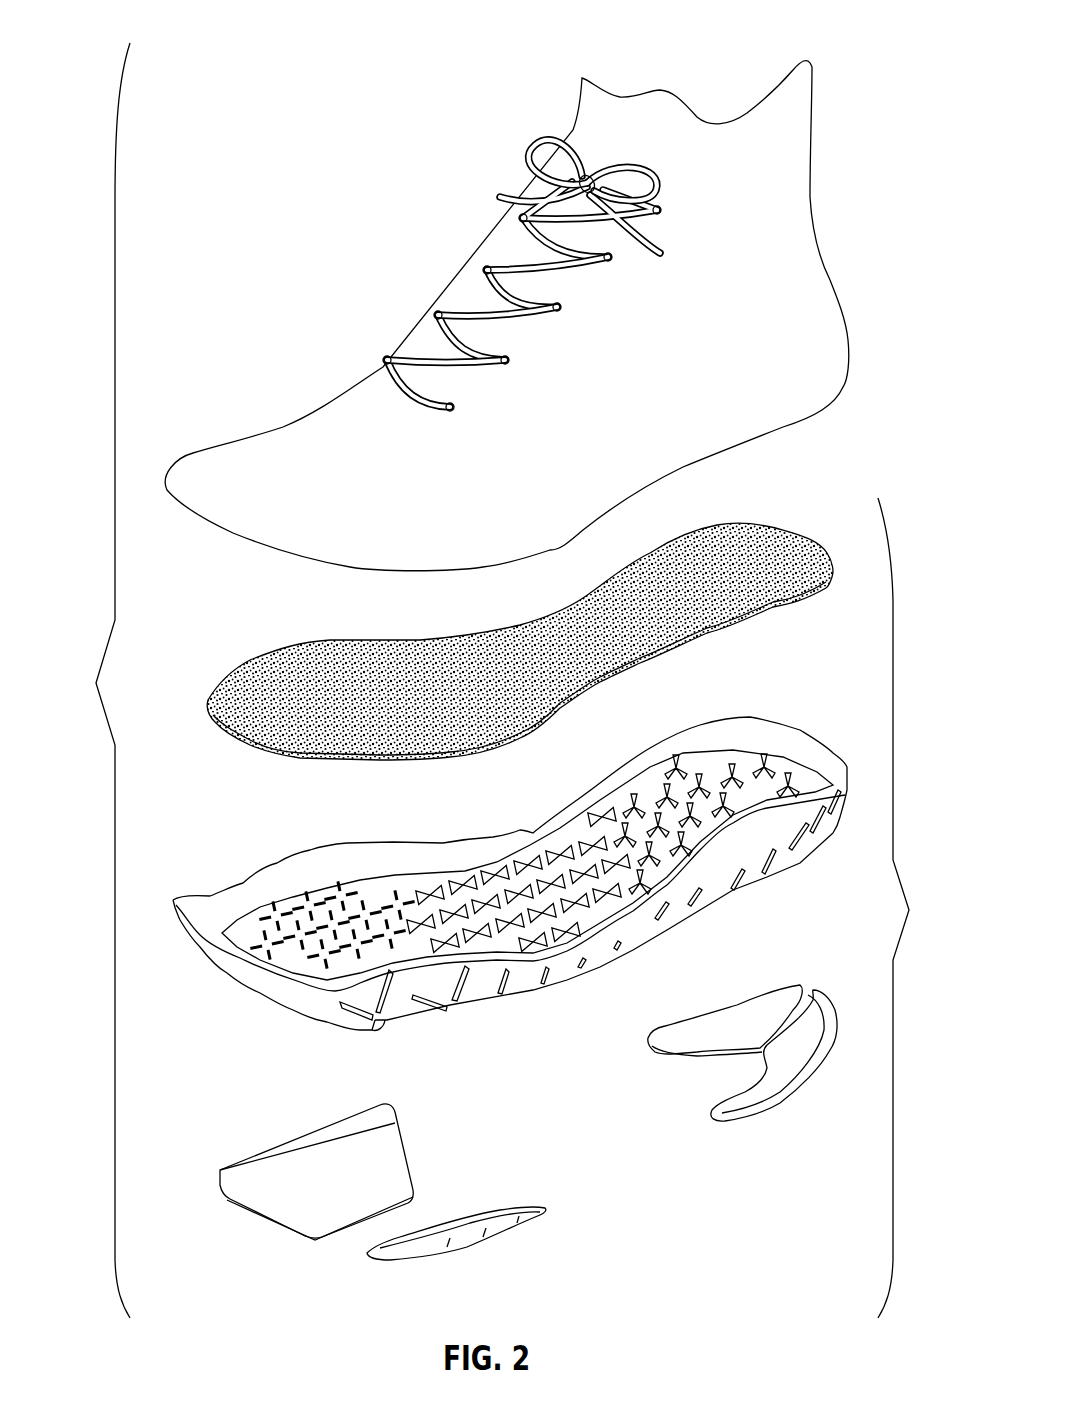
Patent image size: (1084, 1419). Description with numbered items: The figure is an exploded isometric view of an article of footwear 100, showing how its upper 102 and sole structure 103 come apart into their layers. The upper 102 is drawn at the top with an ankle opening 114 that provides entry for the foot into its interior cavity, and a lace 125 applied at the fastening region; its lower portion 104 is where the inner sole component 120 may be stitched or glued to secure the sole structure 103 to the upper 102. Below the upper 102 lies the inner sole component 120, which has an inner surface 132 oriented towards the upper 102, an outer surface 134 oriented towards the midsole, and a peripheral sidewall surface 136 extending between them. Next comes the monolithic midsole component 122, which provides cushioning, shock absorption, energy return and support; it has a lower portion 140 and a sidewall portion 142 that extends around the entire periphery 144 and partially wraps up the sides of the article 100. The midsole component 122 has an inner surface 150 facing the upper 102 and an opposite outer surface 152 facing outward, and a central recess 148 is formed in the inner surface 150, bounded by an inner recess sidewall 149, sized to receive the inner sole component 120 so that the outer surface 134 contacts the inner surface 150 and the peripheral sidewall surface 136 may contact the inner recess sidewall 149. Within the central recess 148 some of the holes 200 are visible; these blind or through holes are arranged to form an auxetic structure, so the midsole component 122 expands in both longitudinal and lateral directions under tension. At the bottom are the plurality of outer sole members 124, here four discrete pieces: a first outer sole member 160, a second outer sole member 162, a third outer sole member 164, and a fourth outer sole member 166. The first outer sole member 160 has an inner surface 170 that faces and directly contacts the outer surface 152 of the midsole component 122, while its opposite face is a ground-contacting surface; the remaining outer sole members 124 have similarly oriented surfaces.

The article of footwear 100 is at (87, 680).
The upper 102 is at (295, 438).
The sole structure 103 is at (919, 908).
The lower portion of the upper 104 is at (410, 560).
The ankle opening 114 is at (692, 68).
The inner sole component 120 is at (236, 655).
The midsole component 122 is at (496, 867).
The outer sole members 124 is at (242, 1140).
The lace 125 is at (470, 313).
The inner surface of the inner sole component 132 is at (305, 665).
The outer surface of the inner sole component 134 is at (335, 763).
The peripheral sidewall surface 136 is at (270, 752).
The lower portion of the midsole component 140 is at (680, 755).
The sidewall portion 142 is at (450, 853).
The periphery of the midsole component 144 is at (667, 920).
The central recess 148 is at (400, 883).
The inner recess sidewall 149 is at (293, 897).
The inner surface of the midsole component 150 is at (751, 772).
The outer surface of the midsole component 152 is at (326, 1028).
The first outer sole member 160 is at (237, 1177).
The second outer sole member 162 is at (405, 1258).
The third outer sole member 164 is at (713, 1023).
The fourth outer sole member 166 is at (787, 1063).
The inner surface of the first outer sole member 170 is at (393, 1157).
The holes 200 is at (533, 876).